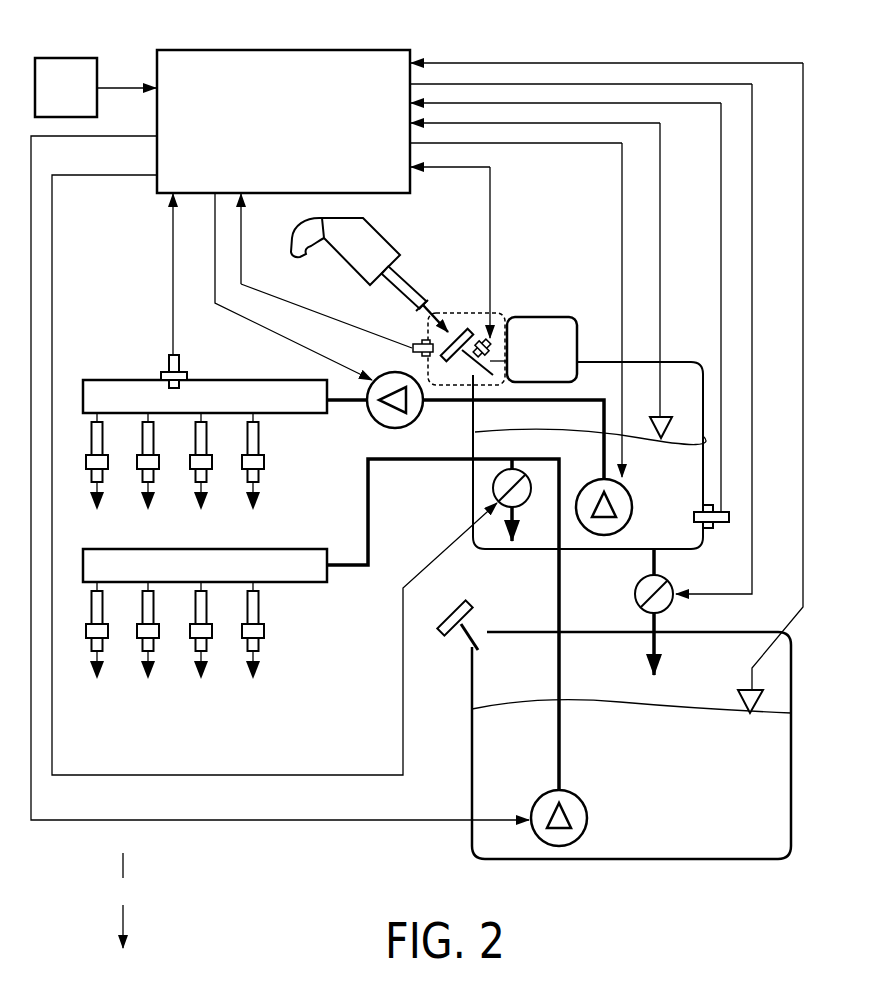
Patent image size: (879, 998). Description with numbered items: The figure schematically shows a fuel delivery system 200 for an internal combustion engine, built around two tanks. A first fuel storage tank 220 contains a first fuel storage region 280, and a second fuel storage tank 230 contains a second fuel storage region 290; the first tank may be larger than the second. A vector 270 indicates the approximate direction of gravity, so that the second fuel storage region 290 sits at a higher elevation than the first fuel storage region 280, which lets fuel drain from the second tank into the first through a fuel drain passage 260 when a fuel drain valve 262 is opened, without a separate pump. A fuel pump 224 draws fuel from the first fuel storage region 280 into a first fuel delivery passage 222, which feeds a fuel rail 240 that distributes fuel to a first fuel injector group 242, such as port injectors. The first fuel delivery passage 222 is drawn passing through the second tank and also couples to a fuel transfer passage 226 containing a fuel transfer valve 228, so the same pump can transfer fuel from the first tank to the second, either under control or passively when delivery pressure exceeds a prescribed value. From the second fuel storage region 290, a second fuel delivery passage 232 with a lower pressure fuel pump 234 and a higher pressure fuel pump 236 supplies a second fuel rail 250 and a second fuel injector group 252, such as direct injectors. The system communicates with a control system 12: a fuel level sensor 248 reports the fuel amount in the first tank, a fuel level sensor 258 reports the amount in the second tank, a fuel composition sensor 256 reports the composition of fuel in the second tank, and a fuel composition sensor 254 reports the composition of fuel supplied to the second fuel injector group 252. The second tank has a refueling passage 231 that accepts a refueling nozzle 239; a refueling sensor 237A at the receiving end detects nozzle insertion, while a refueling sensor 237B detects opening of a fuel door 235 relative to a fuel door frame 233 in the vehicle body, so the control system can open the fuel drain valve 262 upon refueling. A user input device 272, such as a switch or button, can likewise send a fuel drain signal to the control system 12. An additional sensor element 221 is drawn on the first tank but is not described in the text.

The fuel delivery system 200 is at (526, 36).
The control system 12 is at (271, 134).
The user input device 272 is at (49, 100).
The second fuel rail 250 is at (108, 380).
The second fuel injector group 252 is at (231, 505).
The fuel composition sensor 254 is at (167, 360).
The fuel rail 240 is at (298, 583).
The first fuel injector group 242 is at (231, 698).
The second fuel delivery passage 232 is at (476, 406).
The higher pressure fuel pump 236 is at (378, 422).
The lower pressure fuel pump 234 is at (611, 526).
The first fuel delivery passage 222 is at (368, 508).
The fuel transfer valve 228 is at (492, 488).
The fuel transfer passage 226 is at (497, 520).
The second fuel storage region 290 is at (653, 501).
The second fuel storage tank 230 is at (536, 550).
The fuel drain valve 262 is at (636, 600).
The fuel drain passage 260 is at (660, 618).
The fuel level sensor 258 is at (663, 413).
The fuel composition sensor 256 is at (722, 523).
The fuel door 235 is at (525, 361).
The fuel door frame 233 is at (466, 313).
The refueling passage 231 is at (455, 330).
The refueling sensor 237A is at (488, 335).
The refueling sensor 237B is at (413, 342).
The refueling nozzle 239 is at (384, 220).
The first fuel storage tank 220 is at (680, 860).
The first fuel storage region 280 is at (688, 816).
The fuel pump 224 is at (565, 846).
The sensor 221 is at (465, 629).
The fuel level sensor 248 is at (745, 685).
The vector 270 is at (125, 900).